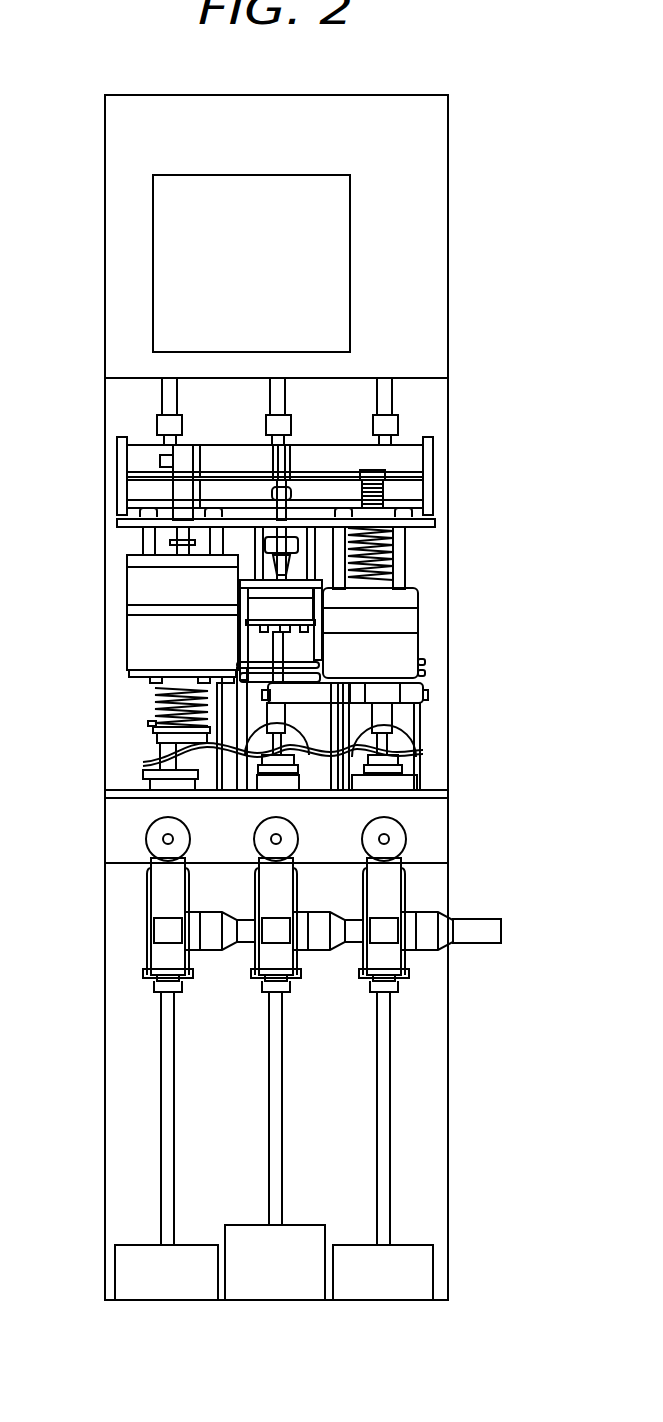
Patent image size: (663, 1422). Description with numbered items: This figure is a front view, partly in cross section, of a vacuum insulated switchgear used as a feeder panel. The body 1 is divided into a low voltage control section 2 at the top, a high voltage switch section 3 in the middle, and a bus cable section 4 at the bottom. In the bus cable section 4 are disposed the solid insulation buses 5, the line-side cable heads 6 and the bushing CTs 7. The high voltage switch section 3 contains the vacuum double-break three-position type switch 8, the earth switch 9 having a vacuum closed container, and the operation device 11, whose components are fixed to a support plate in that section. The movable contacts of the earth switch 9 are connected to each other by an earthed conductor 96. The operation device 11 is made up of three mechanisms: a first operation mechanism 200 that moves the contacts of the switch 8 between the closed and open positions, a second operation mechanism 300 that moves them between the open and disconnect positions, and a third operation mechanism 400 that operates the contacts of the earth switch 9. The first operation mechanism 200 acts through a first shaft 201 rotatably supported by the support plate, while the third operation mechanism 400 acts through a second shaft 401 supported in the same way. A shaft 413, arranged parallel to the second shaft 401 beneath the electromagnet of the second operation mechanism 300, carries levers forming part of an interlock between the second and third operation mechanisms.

The body 1 is at (467, 182).
The low voltage control section 2 is at (435, 260).
The high voltage switch section 3 is at (432, 397).
The bus cable section 4 is at (430, 1058).
The solid insulation bus 5 is at (410, 975).
The cable head 6 is at (405, 836).
The bushing CT 7 is at (435, 1272).
The vacuum double-break three-position type switch 8 is at (424, 727).
The earth switch 9 is at (424, 781).
The operation device 11 is at (125, 598).
The earthed conductor 96 is at (160, 761).
The first operation mechanism 200 is at (125, 646).
The first shaft 201 is at (225, 445).
The second operation mechanism 300 is at (328, 612).
The third operation mechanism 400 is at (430, 603).
The second shaft 401 is at (412, 494).
The shaft 413 is at (425, 713).